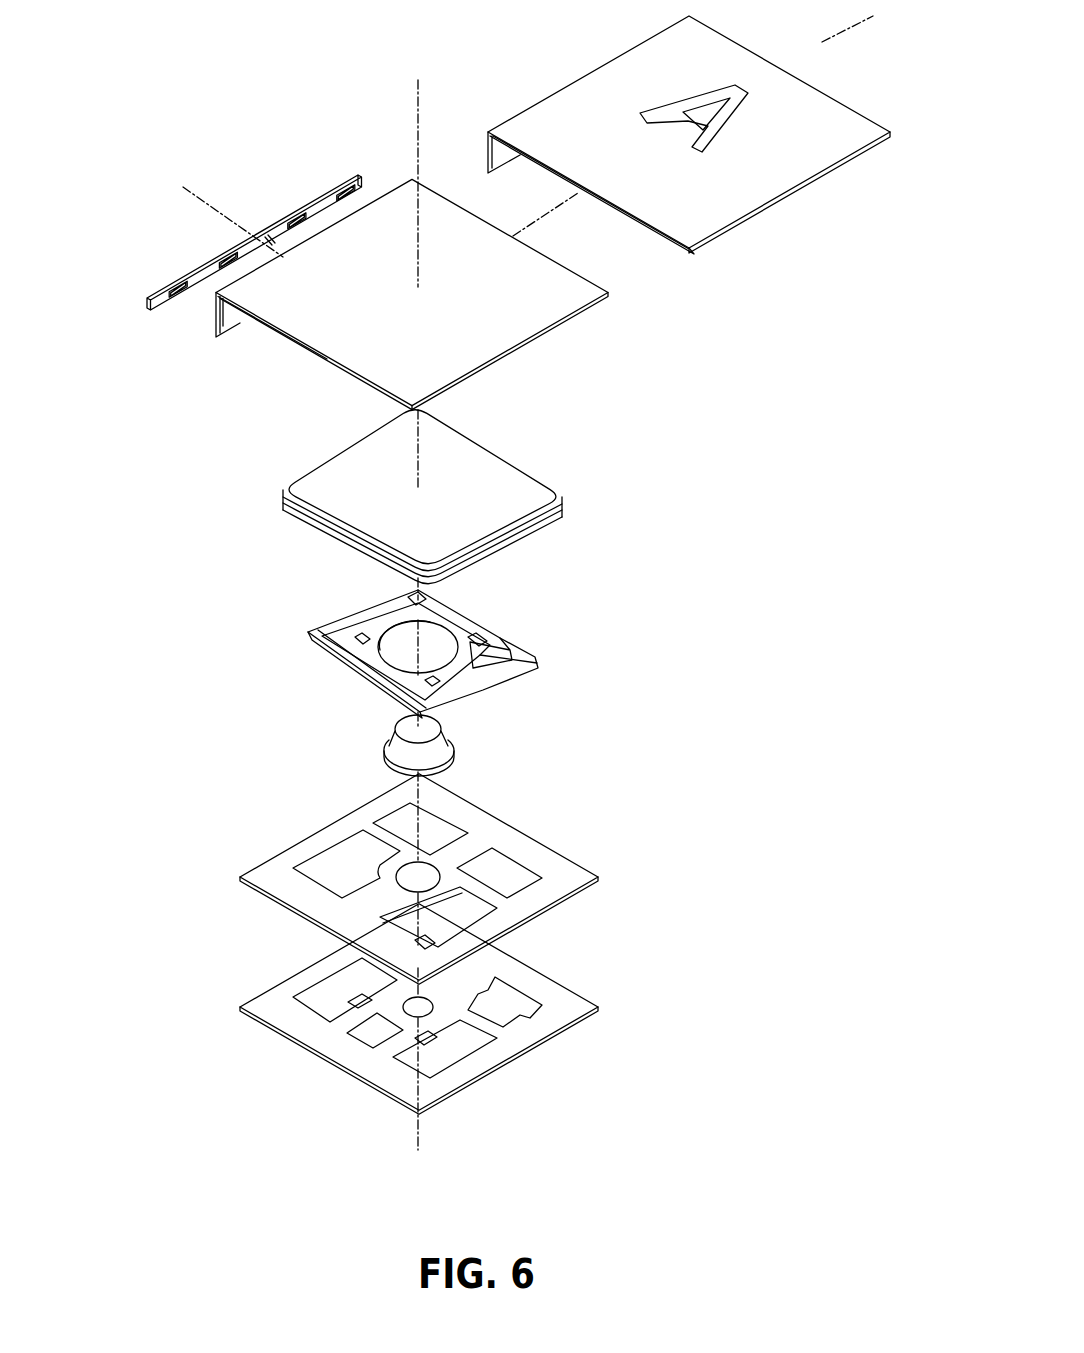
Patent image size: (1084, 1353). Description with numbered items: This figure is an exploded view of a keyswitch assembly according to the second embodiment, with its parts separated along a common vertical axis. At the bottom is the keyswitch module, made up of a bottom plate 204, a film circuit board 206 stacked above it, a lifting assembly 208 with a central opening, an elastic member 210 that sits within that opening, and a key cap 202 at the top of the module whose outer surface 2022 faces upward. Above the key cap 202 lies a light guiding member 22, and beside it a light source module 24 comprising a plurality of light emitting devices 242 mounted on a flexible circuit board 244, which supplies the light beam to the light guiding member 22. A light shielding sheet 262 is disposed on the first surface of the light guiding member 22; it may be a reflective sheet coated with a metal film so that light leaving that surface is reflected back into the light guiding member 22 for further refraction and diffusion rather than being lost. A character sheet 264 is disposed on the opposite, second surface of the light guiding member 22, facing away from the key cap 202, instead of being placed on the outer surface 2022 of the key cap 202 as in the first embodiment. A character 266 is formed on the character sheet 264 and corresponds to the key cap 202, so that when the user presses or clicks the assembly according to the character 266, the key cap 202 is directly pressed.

The light guiding member 22 is at (211, 331).
The light source module 24 is at (195, 262).
The light emitting devices 242 is at (336, 188).
The flexible circuit board 244 is at (272, 233).
The key cap 202 is at (361, 497).
The outer surface 2022 is at (330, 478).
The bottom plate 204 is at (312, 976).
The film circuit board 206 is at (310, 848).
The lifting assembly 208 is at (310, 640).
The elastic member 210 is at (385, 752).
The light shielding sheet 262 is at (672, 250).
The character sheet 264 is at (580, 123).
The character 266 is at (747, 94).